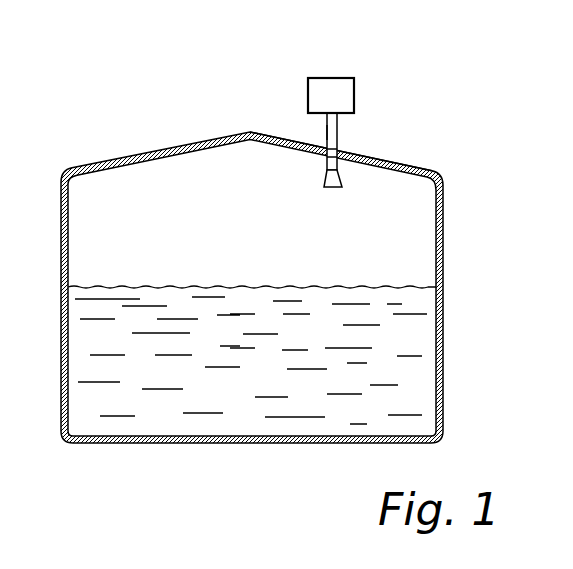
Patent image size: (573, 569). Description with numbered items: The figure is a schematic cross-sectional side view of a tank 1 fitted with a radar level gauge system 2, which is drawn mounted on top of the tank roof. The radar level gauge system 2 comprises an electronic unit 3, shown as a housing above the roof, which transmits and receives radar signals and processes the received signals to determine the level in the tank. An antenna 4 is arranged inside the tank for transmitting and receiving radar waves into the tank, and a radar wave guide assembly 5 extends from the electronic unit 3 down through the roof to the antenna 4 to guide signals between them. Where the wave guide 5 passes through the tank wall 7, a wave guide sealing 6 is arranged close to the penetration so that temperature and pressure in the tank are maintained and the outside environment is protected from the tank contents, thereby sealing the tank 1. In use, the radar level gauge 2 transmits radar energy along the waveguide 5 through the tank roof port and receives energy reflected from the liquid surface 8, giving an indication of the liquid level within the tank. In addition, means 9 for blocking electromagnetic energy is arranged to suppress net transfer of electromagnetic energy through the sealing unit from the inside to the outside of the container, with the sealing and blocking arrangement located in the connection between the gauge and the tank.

The tank 1 is at (443, 271).
The radar level gauge system 2 is at (268, 50).
The electronic unit 3 is at (355, 92).
The antenna 4 is at (342, 181).
The radar wave guide assembly 5 is at (337, 129).
The wave guide sealing 6 is at (327, 132).
The tank wall 7 is at (432, 168).
The liquid surface 8 is at (138, 287).
The means for blocking electromagnetic energy 9 is at (337, 147).